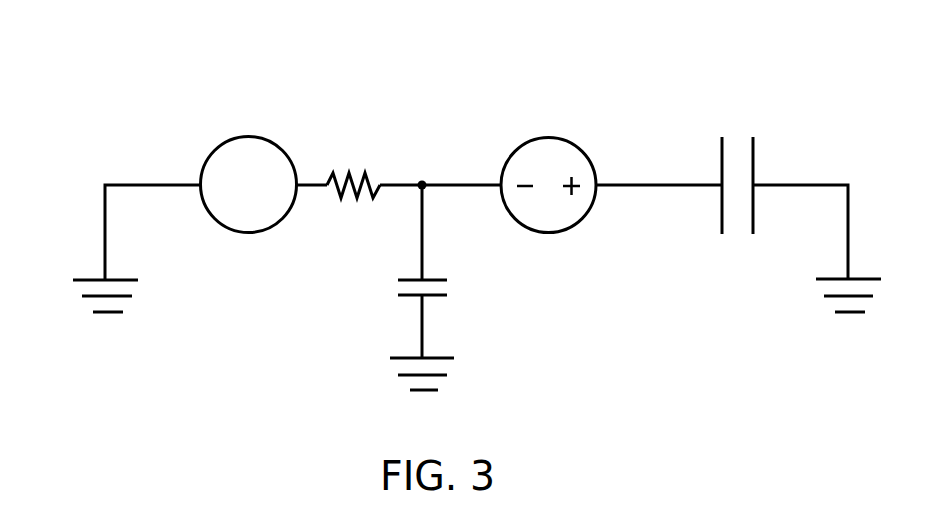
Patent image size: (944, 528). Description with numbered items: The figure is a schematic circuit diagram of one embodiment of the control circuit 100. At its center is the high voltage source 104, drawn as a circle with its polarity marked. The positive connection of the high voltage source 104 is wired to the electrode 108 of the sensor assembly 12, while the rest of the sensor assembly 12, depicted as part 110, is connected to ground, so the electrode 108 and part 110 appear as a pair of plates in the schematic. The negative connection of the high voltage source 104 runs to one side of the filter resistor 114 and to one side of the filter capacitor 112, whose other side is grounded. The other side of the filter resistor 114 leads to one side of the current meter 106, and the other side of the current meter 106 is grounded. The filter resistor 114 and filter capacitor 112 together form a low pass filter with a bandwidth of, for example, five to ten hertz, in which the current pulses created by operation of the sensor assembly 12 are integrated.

The circuit 100 is at (155, 60).
The current meter 106 is at (232, 139).
The filter resistor 114 is at (360, 172).
The filter capacitor 112 is at (398, 288).
The high voltage source 104 is at (530, 140).
The sensor assembly 12 is at (740, 130).
The electrode 108 is at (720, 155).
The rest of the sensor assembly 110 is at (755, 155).